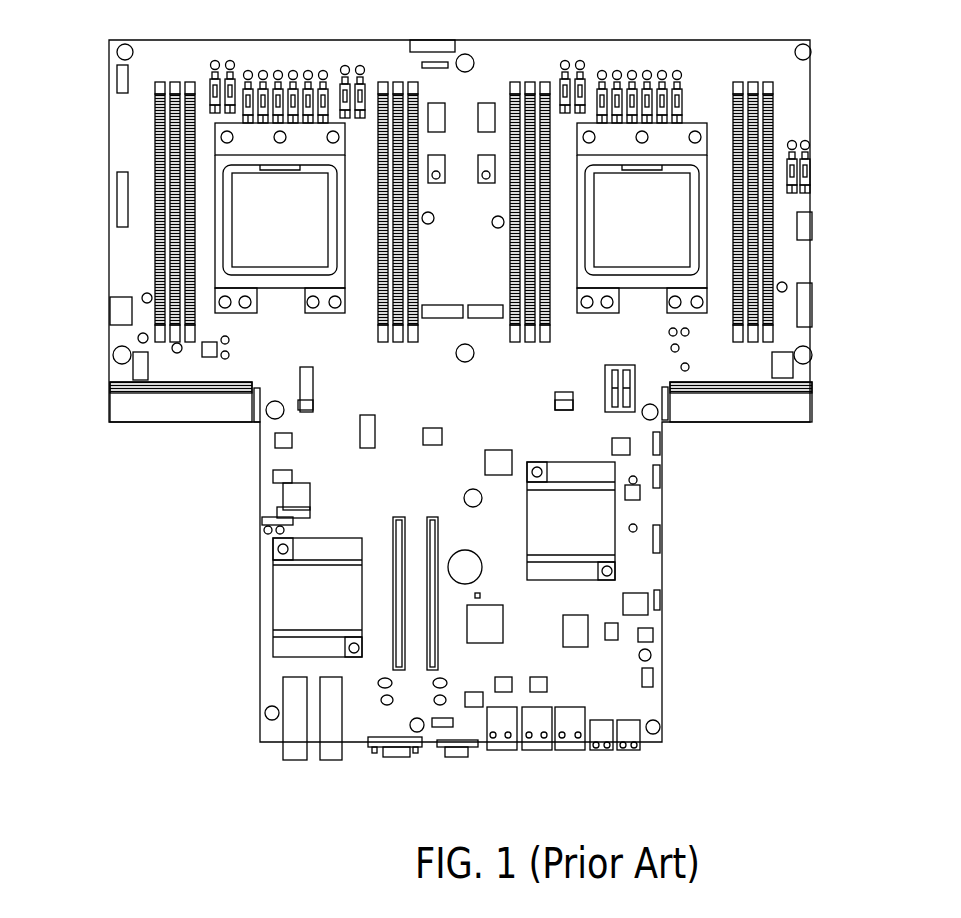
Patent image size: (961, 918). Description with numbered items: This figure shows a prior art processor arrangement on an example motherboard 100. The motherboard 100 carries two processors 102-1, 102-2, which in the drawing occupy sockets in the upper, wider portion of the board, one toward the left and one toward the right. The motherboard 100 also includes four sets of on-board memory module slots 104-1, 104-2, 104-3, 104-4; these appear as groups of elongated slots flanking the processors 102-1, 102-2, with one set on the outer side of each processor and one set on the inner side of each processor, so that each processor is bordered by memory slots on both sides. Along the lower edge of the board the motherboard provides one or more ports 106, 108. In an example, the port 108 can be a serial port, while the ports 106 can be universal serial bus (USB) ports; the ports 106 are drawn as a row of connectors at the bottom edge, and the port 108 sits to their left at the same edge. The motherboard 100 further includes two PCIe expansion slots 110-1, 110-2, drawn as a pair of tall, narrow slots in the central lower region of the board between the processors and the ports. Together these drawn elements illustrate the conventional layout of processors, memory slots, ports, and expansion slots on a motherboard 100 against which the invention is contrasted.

The motherboard 100 is at (888, 134).
The processor 102-1 is at (250, 257).
The processor 102-2 is at (677, 255).
The on-board memory module slots 104-1 is at (172, 245).
The on-board memory module slots 104-2 is at (400, 295).
The on-board memory module slots 104-3 is at (533, 302).
The on-board memory module slots 104-4 is at (757, 247).
The ports 106 is at (570, 735).
The port 108 is at (397, 750).
The PCIe expansion slot 110-1 is at (395, 593).
The PCIe expansion slot 110-2 is at (435, 650).